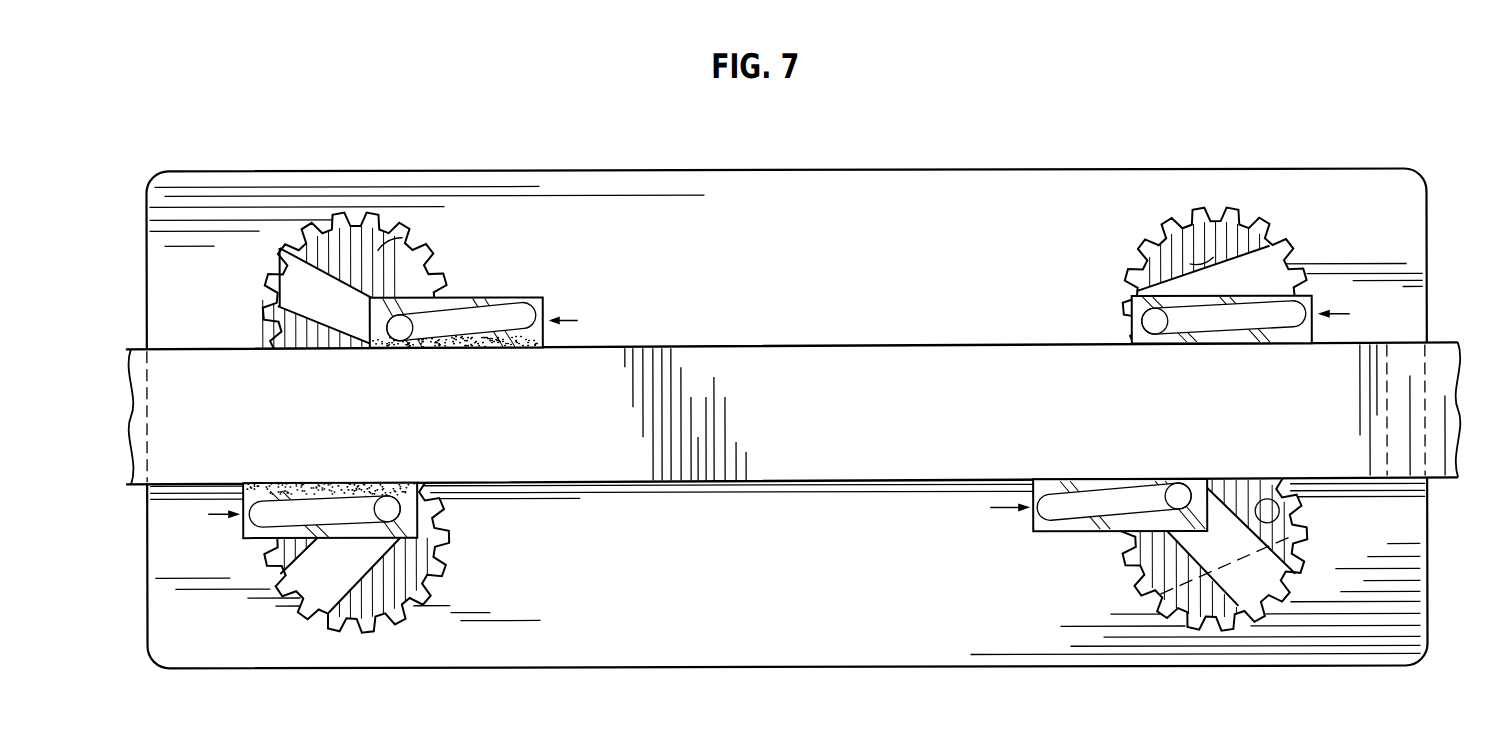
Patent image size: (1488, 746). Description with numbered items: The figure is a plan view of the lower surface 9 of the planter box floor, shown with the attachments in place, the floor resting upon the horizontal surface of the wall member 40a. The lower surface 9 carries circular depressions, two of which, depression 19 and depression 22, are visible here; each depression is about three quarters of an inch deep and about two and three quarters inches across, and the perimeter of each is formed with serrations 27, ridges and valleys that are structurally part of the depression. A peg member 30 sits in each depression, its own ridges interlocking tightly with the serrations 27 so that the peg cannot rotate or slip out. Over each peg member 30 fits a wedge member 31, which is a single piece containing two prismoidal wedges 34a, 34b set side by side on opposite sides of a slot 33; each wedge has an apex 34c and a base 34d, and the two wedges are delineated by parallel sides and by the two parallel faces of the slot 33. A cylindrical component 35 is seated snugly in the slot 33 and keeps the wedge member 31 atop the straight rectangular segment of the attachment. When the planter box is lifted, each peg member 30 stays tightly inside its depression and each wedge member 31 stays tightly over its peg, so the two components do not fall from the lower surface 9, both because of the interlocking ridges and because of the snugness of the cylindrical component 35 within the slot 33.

The lower surface 9 is at (826, 650).
The circular depression 19 is at (378, 255).
The serrations 27 is at (275, 250).
The circular depression 22 is at (1218, 245).
The peg member 30 is at (1290, 253).
The wedge member 31 is at (338, 545).
The slot 33 is at (480, 347).
The cylindrical component 35 is at (385, 347).
The prismoidal wedge 34a is at (492, 363).
The prismoidal wedge 34b is at (265, 482).
The apex 34c is at (341, 475).
The base 34d is at (415, 482).
The wall member 40a is at (1456, 343).